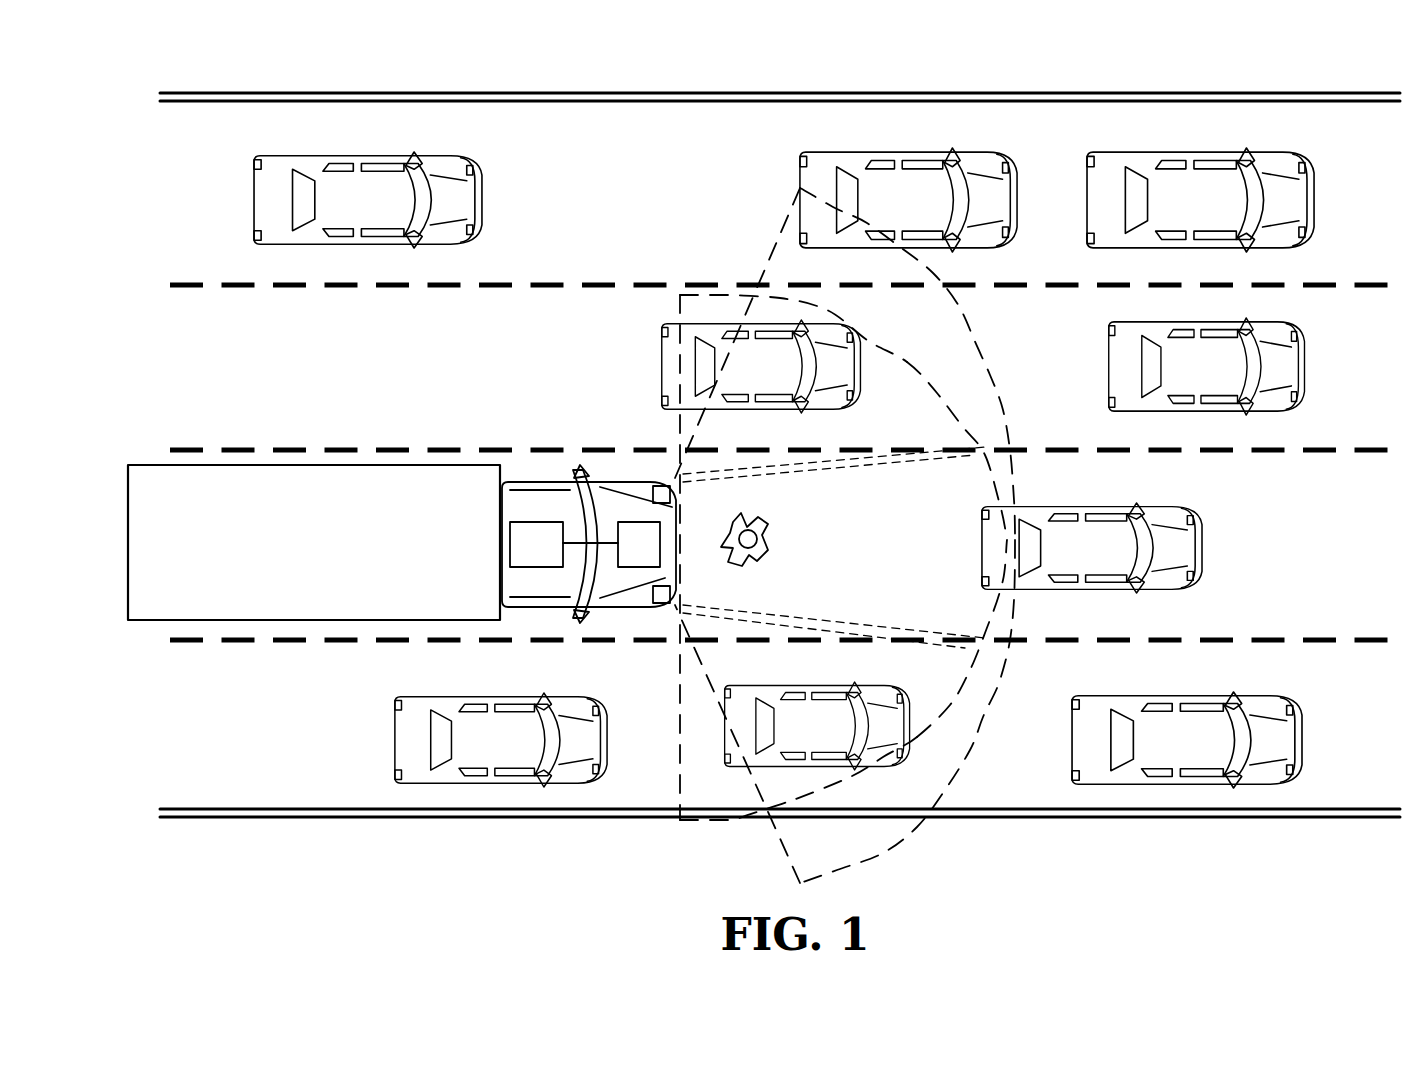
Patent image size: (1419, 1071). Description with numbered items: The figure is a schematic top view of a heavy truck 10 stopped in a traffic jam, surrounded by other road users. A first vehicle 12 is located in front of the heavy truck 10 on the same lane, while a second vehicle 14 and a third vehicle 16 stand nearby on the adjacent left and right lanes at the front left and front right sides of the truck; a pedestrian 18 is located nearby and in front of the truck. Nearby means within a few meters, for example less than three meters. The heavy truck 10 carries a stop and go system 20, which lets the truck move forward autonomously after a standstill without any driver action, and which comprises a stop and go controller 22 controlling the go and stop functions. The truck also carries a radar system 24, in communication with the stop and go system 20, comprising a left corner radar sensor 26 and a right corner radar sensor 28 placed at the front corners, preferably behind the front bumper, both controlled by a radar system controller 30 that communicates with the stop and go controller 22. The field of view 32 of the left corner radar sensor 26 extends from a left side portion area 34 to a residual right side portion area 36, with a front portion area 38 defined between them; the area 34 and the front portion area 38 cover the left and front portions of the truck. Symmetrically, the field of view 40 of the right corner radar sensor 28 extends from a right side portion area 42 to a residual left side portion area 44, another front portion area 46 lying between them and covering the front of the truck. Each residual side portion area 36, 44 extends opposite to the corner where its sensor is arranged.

The heavy truck 10 is at (349, 464).
The first vehicle 12 is at (1232, 551).
The second vehicle 14 is at (718, 310).
The third vehicle 16 is at (922, 753).
The pedestrian 18 is at (728, 578).
The stop and go system 20 is at (528, 516).
The stop and go controller 22 is at (535, 568).
The radar system 24 is at (600, 473).
The left corner radar sensor 26 is at (658, 515).
The right corner radar sensor 28 is at (667, 600).
The radar system controller 30 is at (663, 578).
The field of view 32 is at (968, 312).
The left side portion area 34 is at (887, 328).
The residual right side portion area 36 is at (689, 800).
The front portion area 38 is at (887, 535).
The field of view 40 is at (870, 860).
The right side portion area 42 is at (804, 858).
The residual left side portion area 44 is at (874, 413).
The front portion area 46 is at (909, 600).